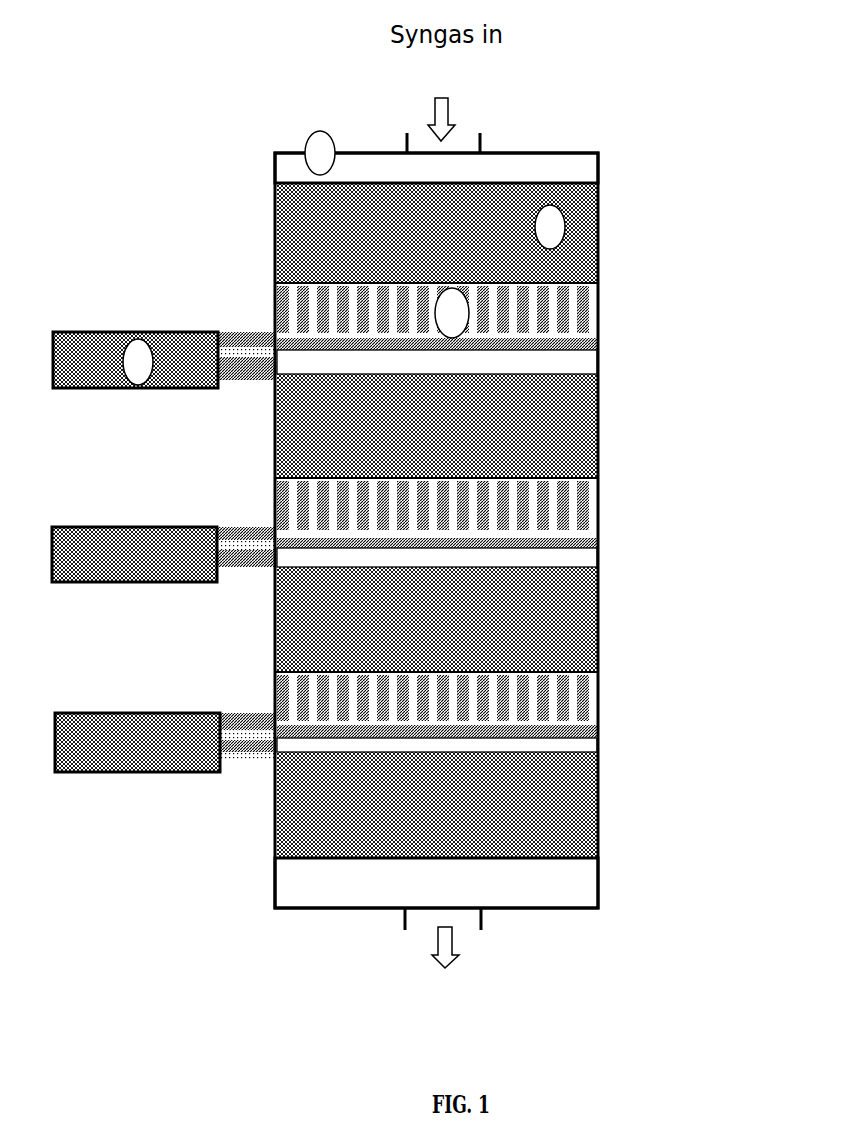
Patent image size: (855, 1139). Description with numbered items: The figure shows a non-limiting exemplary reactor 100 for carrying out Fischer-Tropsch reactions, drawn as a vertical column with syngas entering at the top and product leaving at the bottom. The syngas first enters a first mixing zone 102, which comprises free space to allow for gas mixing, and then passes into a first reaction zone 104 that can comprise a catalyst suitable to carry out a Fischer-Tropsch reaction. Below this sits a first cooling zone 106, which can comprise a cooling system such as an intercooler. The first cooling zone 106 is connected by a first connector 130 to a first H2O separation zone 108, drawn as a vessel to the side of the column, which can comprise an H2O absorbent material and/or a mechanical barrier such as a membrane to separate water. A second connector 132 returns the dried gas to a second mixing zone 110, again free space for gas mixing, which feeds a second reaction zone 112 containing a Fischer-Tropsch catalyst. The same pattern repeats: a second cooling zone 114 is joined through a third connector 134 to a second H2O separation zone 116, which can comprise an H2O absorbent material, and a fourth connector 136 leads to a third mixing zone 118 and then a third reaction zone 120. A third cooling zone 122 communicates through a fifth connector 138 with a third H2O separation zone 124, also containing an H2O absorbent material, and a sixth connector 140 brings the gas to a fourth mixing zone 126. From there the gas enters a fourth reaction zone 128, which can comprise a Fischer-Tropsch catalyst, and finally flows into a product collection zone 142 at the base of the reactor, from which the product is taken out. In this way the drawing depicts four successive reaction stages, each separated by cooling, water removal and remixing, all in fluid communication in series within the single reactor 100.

The reactor 100 is at (593, 90).
The first mixing zone 102 is at (598, 163).
The first reaction zone 104 is at (598, 230).
The first cooling zone 106 is at (598, 310).
The first H2O separation zone 108 is at (97, 336).
The second mixing zone 110 is at (598, 363).
The second reaction zone 112 is at (598, 432).
The second cooling zone 114 is at (598, 515).
The second H2O separation zone 116 is at (62, 527).
The third mixing zone 118 is at (598, 553).
The third reaction zone 120 is at (598, 615).
The third cooling zone 122 is at (598, 700).
The third H2O separation zone 124 is at (68, 713).
The fourth mixing zone 126 is at (598, 742).
The fourth reaction zone 128 is at (598, 815).
The first connector 130 is at (253, 332).
The second connector 132 is at (260, 376).
The third connector 134 is at (230, 527).
The fourth connector 136 is at (258, 569).
The fifth connector 138 is at (238, 713).
The sixth connector 140 is at (253, 756).
The product collection zone 142 is at (598, 888).